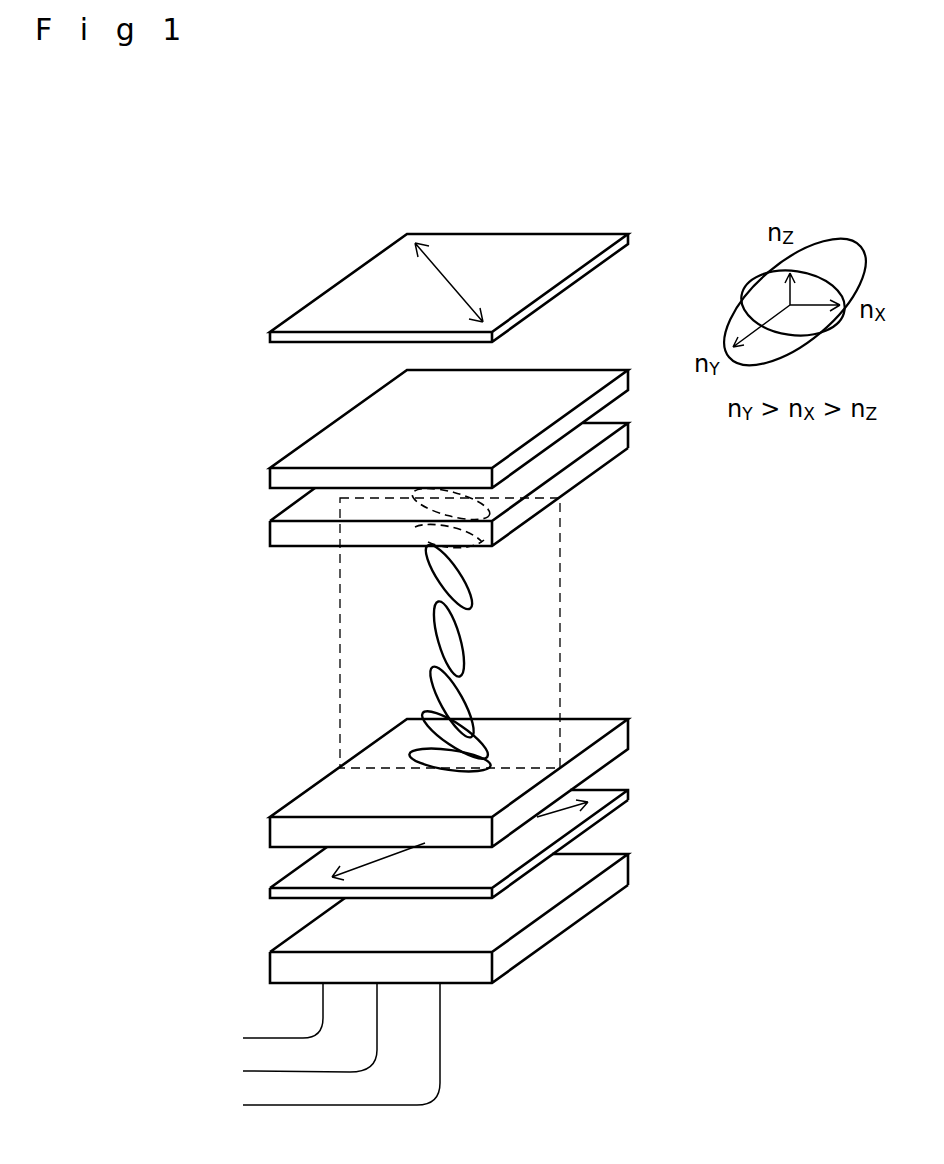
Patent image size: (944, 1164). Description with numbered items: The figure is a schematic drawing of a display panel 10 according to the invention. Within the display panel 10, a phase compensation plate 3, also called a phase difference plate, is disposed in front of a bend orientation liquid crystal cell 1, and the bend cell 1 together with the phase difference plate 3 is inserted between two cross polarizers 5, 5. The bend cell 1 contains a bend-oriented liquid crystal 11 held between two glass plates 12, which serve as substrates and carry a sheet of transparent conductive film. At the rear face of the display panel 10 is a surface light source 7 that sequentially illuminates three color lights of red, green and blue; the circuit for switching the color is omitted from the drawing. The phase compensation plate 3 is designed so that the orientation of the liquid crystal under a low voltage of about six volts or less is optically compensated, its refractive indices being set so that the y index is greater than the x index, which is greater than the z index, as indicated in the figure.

The bend orientation liquid crystal cell 1 is at (660, 414).
The phase compensation plate 3 is at (578, 367).
The cross polarizer 5 is at (553, 233).
The surface light source 7 is at (569, 966).
The display panel 10 is at (245, 295).
The bend-oriented liquid crystal 11 is at (462, 645).
The glass plate 12 is at (307, 547).